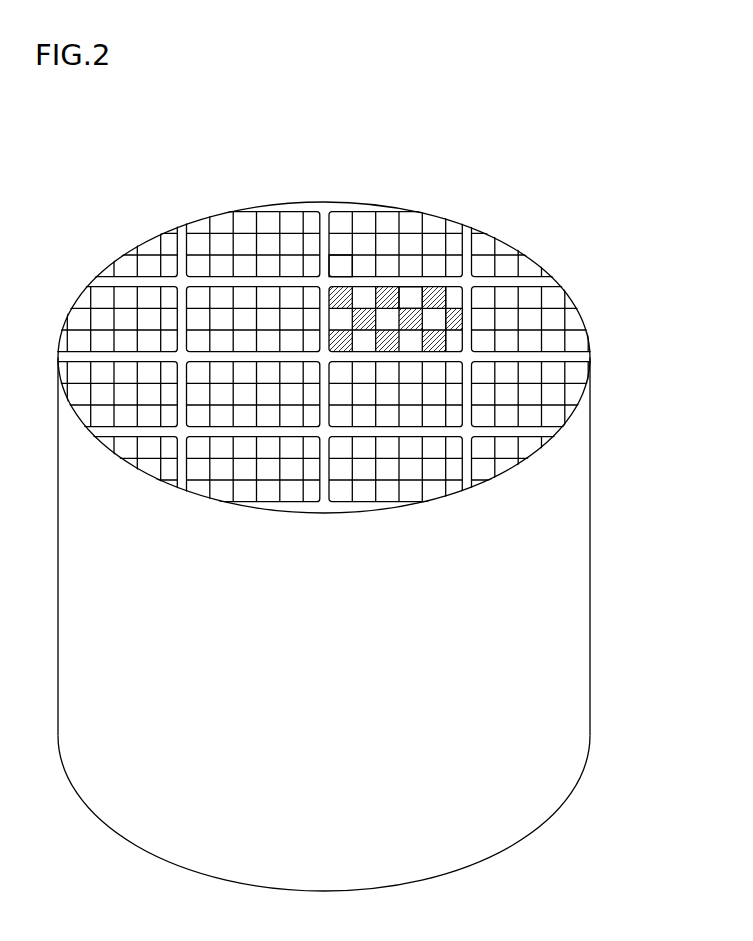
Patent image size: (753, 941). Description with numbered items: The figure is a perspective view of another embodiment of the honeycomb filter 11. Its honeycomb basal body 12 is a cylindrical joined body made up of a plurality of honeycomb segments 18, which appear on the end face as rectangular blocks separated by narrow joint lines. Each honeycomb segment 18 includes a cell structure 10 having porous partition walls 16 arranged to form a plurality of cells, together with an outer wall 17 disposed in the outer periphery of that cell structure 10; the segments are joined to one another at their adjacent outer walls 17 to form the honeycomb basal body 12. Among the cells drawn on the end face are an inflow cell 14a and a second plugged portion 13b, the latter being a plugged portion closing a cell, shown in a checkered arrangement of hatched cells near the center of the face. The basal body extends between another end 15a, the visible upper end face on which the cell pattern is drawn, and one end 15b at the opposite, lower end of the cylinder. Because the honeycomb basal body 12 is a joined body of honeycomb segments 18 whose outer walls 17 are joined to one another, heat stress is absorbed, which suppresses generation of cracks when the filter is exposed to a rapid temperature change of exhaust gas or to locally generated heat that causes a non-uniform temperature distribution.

The cell structure 10 is at (574, 406).
The honeycomb filter 11 is at (89, 127).
The honeycomb basal body 12 is at (585, 517).
The second plugged portion 13b is at (340, 283).
The inflow cell 14a is at (410, 293).
The another end 15a is at (593, 315).
The one end 15b is at (550, 842).
The partition wall 16 is at (452, 299).
The outer wall 17 is at (438, 300).
The honeycomb segment 18 is at (290, 223).